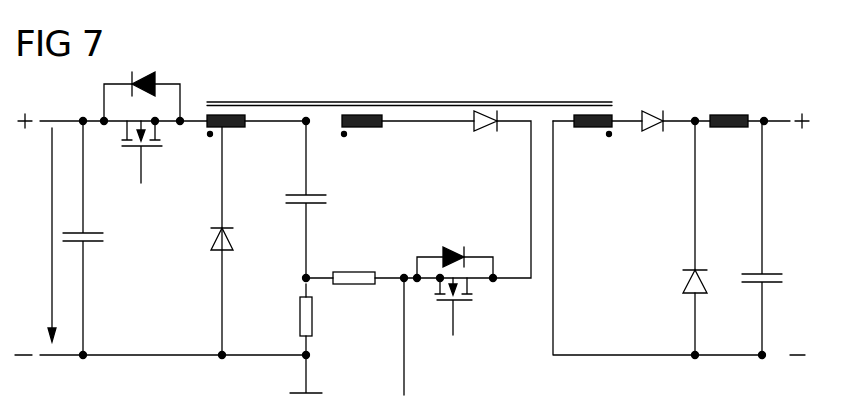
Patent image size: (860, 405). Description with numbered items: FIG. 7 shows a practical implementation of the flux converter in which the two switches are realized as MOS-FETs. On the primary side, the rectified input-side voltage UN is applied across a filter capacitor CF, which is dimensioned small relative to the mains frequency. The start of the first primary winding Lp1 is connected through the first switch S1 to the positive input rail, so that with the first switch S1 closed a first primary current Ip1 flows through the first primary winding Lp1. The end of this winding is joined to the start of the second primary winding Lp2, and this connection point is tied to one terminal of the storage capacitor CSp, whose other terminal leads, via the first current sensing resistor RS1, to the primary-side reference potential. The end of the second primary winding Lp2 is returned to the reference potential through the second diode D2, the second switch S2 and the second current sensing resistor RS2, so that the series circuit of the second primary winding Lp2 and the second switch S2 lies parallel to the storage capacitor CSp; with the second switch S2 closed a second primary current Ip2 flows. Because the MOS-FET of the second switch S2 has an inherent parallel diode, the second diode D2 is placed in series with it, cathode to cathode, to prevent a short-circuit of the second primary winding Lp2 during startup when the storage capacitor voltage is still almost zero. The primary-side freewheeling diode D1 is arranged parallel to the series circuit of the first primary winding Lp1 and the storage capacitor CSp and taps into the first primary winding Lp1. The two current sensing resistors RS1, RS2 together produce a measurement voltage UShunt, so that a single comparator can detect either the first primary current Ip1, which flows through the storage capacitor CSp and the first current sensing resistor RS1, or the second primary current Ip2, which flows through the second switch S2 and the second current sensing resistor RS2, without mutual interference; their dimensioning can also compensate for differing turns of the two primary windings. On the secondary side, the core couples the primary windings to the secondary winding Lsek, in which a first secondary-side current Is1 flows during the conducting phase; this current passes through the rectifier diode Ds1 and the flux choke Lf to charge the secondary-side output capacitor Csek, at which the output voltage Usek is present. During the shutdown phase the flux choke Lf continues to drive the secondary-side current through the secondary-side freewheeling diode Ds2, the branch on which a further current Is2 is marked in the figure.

The input-side voltage UN is at (34, 235).
The filter capacitor CF is at (104, 237).
The first switch S1 is at (128, 148).
The primary-side freewheeling diode D1 is at (214, 232).
The first primary winding Lp1 is at (211, 137).
The first primary current Ip1 is at (282, 121).
The storage capacitor CSp is at (297, 207).
The second primary winding Lp2 is at (352, 135).
The second primary current Ip2 is at (438, 121).
The second diode D2 is at (486, 133).
The second current sensing resistor RS2 is at (352, 270).
The first current sensing resistor RS1 is at (312, 316).
The measurement voltage UShunt is at (397, 355).
The second switch S2 is at (460, 304).
The secondary winding Lsek is at (592, 130).
The rectifier diode Ds1 is at (654, 133).
The flux choke Lf is at (728, 114).
The first secondary-side current Is1 is at (553, 236).
The second secondary current Is2 is at (695, 170).
The secondary-side freewheeling diode Ds2 is at (688, 272).
The secondary-side output capacitor Csek is at (752, 272).
The output voltage Usek is at (790, 240).